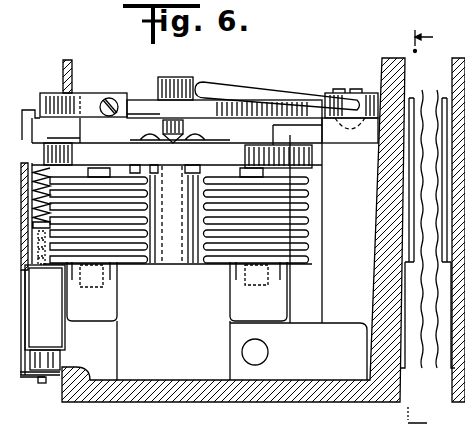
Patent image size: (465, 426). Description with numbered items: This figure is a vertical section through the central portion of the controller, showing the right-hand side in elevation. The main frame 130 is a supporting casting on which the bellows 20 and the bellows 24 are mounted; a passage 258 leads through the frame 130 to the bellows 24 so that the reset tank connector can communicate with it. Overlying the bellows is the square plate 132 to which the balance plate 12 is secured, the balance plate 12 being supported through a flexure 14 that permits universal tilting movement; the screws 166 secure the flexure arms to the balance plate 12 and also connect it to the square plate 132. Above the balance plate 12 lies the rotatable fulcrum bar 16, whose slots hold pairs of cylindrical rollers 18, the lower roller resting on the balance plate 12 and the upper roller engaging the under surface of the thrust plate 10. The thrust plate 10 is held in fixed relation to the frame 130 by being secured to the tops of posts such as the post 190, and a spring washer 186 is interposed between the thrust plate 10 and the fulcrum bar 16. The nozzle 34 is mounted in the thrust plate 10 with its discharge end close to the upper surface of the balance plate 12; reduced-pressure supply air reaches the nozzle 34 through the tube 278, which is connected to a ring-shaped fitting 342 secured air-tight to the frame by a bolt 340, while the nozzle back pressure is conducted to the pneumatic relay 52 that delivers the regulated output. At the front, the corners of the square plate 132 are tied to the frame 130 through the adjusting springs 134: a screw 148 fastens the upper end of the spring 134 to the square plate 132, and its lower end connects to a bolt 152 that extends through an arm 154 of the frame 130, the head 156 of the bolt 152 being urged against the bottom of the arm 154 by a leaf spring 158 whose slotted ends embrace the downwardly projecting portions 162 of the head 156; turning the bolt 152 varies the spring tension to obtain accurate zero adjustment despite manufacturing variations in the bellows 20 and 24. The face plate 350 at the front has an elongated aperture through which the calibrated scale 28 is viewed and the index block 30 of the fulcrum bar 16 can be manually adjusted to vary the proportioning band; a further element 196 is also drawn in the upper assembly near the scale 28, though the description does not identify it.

The face plate 350 is at (62, 64).
The index block 30 is at (33, 109).
The calibrated scale 28 is at (72, 107).
The screw 196 is at (112, 97).
The spring washer 186 is at (157, 112).
The nozzle 34 is at (170, 120).
The thrust plate 10 is at (207, 105).
The tube 278 is at (242, 87).
The ring-shaped fitting 342 is at (367, 108).
The bolt 340 is at (343, 92).
The cylindrical rollers 18 is at (58, 130).
The pneumatic relay 52 is at (446, 98).
The screw 148 is at (43, 166).
The adjusting springs 134 is at (50, 183).
The screws 166 is at (197, 145).
The flexure 14 is at (208, 146).
The balance plate 12 is at (295, 157).
The fulcrum bar 16 is at (296, 133).
The square plate 132 is at (312, 172).
The main frame 130 is at (388, 219).
The bolt 152 is at (35, 257).
The arm 154 is at (50, 306).
The head 156 is at (42, 358).
The leaf spring 158 is at (25, 378).
The downwardly projecting portions 162 is at (47, 383).
The bellows 20 is at (118, 240).
The bellows 24 is at (240, 238).
The post 190 is at (173, 237).
The passage 258 is at (258, 352).